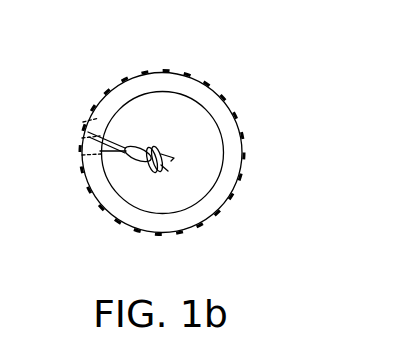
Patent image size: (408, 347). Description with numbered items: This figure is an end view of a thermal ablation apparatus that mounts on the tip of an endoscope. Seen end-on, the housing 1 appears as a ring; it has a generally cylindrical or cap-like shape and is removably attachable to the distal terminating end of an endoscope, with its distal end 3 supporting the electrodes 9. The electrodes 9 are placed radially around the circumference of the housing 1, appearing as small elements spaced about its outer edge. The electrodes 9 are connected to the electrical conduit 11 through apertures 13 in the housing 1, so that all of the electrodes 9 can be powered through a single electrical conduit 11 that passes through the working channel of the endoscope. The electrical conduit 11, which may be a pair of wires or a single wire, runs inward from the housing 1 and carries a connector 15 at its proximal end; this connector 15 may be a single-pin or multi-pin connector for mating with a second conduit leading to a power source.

The housing 1 is at (233, 112).
The distal end 3 is at (234, 152).
The electrodes 9 is at (138, 74).
The electrical conduit 11 is at (137, 152).
The apertures 13 is at (88, 119).
The connector 15 is at (158, 169).